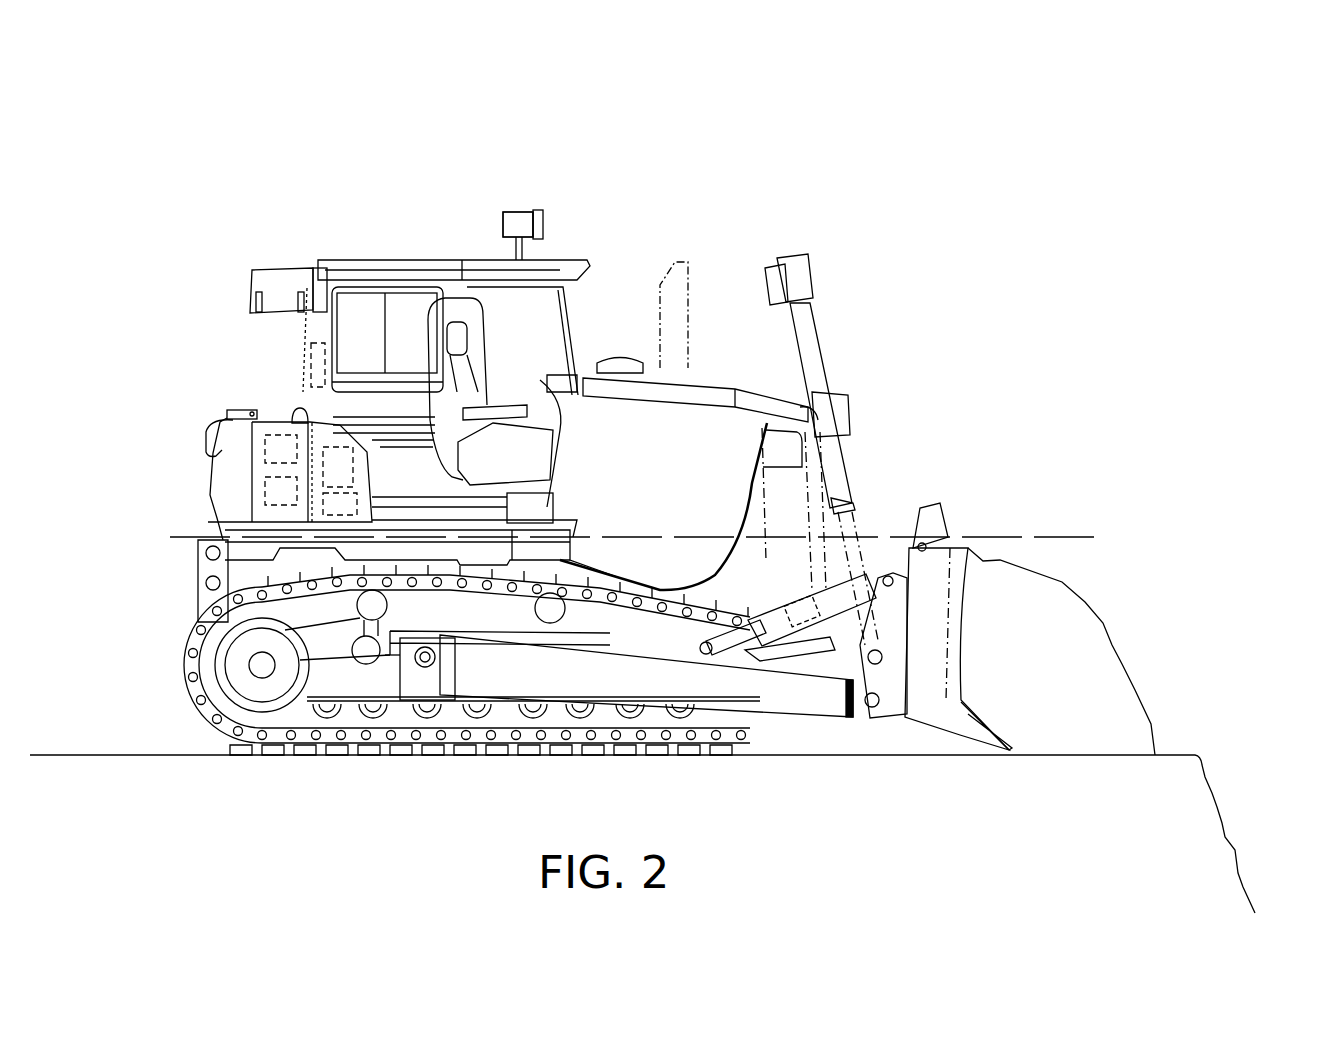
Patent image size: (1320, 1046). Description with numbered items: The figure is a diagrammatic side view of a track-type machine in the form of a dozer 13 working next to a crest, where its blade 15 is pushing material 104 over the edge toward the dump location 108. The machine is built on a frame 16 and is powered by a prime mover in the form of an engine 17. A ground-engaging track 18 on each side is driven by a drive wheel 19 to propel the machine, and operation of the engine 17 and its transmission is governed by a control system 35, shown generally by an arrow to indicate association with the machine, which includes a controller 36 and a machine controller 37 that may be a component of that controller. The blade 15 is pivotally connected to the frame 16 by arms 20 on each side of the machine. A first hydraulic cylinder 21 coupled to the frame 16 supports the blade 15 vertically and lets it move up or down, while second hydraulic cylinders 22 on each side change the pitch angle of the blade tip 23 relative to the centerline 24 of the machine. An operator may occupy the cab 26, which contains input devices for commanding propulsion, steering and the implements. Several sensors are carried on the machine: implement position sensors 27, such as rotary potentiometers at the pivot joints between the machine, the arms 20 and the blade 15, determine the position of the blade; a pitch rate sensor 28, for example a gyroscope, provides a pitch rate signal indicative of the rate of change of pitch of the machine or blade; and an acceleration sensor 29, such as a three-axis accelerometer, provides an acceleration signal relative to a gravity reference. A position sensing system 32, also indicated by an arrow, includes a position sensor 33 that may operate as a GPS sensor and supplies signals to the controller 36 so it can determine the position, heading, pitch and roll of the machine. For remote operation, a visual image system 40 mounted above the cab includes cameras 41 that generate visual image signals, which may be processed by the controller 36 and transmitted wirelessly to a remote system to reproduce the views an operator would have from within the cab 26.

The dozer 13 is at (722, 262).
The blade 15 is at (938, 563).
The frame 16 is at (207, 563).
The engine 17 is at (687, 447).
The track 18 is at (207, 620).
The drive wheel 19 is at (240, 658).
The arms 20 is at (727, 690).
The first hydraulic cylinder 21 is at (802, 320).
The second hydraulic cylinders 22 is at (828, 600).
The blade tip 23 is at (976, 743).
The centerline 24 is at (1077, 533).
The cab 26 is at (543, 307).
The implement position sensors 27 is at (797, 620).
The pitch rate sensor 28 is at (253, 425).
The acceleration sensor 29 is at (260, 487).
The position sensing system 32 is at (203, 291).
The position sensor 33 is at (303, 373).
The control system 35 is at (155, 319).
The controller 36 is at (290, 413).
The machine controller 37 is at (260, 512).
The visual image system 40 is at (543, 150).
The cameras 41 is at (517, 210).
The material 104 is at (1058, 668).
The dump location 108 is at (1215, 712).